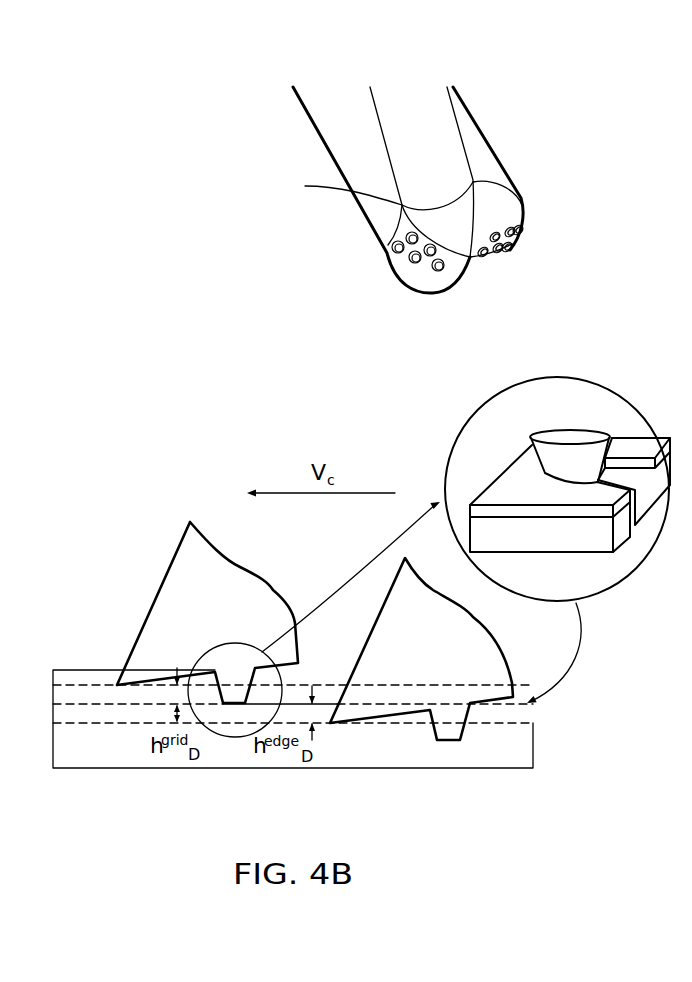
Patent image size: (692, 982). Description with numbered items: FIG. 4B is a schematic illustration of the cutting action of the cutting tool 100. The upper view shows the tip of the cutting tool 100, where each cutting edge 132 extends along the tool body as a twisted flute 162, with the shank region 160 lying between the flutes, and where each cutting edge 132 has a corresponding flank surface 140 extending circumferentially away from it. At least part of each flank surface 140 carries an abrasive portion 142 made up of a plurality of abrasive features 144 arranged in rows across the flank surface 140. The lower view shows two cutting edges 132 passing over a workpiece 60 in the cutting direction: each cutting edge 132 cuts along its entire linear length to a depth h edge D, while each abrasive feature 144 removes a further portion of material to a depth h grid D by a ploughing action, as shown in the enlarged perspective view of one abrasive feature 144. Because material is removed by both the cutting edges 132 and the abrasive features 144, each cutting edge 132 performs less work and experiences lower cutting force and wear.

The cutting tool 100 is at (281, 114).
The tool shank face 160 is at (420, 120).
The twisted flute 162 is at (438, 163).
The flank surface 140 is at (497, 207).
The abrasive portion 142 is at (527, 240).
The abrasive feature 144 is at (510, 250).
The cutting edge 132 is at (360, 653).
The workpiece 60 is at (105, 753).